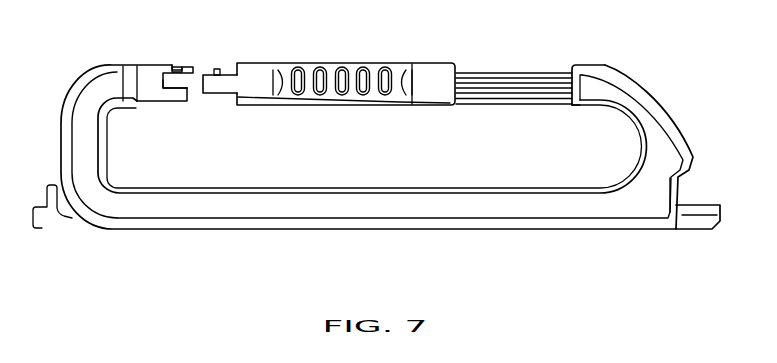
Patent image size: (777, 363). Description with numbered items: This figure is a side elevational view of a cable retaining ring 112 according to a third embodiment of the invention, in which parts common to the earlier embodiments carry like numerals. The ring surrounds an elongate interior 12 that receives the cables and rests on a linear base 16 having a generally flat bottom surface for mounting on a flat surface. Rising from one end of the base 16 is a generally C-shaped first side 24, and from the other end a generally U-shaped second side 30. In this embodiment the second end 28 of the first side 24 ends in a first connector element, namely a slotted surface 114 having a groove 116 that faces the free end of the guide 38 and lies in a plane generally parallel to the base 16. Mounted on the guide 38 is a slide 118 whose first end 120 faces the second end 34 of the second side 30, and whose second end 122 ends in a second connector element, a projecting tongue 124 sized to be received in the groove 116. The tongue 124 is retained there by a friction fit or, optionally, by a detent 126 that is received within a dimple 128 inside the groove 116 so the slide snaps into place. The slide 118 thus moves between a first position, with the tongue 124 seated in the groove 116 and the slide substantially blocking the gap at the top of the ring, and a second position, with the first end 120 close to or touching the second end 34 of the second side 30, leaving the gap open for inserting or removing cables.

The elongate interior 12 is at (483, 165).
The base 16 is at (297, 210).
The first side 24 is at (82, 142).
The second end 28 is at (115, 72).
The second side 30 is at (658, 146).
The second end 34 is at (598, 72).
The guide 38 is at (533, 80).
The cable retaining ring 112 is at (631, 254).
The slotted surface 114 is at (188, 69).
The groove 116 is at (183, 88).
The slide 118 is at (342, 64).
The first end 120 is at (441, 73).
The second end 122 is at (263, 72).
The projecting tongue 124 is at (223, 85).
The detent 126 is at (216, 68).
The dimple 128 is at (178, 72).